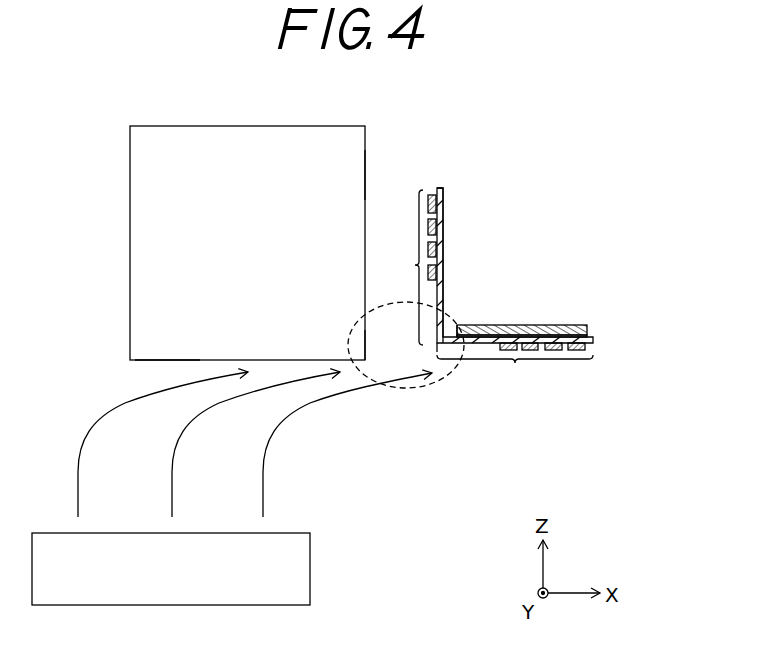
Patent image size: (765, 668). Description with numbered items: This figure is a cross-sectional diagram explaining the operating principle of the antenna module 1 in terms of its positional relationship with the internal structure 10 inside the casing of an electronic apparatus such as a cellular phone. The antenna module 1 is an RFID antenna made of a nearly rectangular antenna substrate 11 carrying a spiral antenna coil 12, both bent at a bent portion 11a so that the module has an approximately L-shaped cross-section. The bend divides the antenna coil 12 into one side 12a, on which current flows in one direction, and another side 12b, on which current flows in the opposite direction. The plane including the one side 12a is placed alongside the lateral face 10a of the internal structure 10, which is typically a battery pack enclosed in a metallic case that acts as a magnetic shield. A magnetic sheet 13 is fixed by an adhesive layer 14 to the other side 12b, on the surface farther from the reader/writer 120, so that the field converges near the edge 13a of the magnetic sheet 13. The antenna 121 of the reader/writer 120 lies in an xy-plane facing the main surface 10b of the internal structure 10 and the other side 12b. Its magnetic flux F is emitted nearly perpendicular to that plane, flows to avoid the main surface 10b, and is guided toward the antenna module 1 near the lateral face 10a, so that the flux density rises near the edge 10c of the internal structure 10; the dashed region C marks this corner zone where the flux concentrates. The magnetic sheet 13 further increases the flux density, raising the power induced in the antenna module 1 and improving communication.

The antenna module 1 is at (589, 199).
The internal structure 10 is at (246, 126).
The lateral face 10a is at (366, 176).
The main surface 10b is at (152, 360).
The edge 10c is at (366, 345).
The antenna substrate 11 is at (441, 207).
The bent portion 11a is at (437, 346).
The antenna coil 12 is at (431, 190).
The one side 12a is at (407, 267).
The other side 12b is at (515, 369).
The magnetic sheet 13 is at (562, 325).
The edge 13a is at (456, 328).
The adhesive layer 14 is at (587, 335).
The reader/writer 120 is at (244, 569).
The antenna 121 is at (310, 578).
The contact region C is at (410, 388).
The magnetic flux F is at (243, 444).